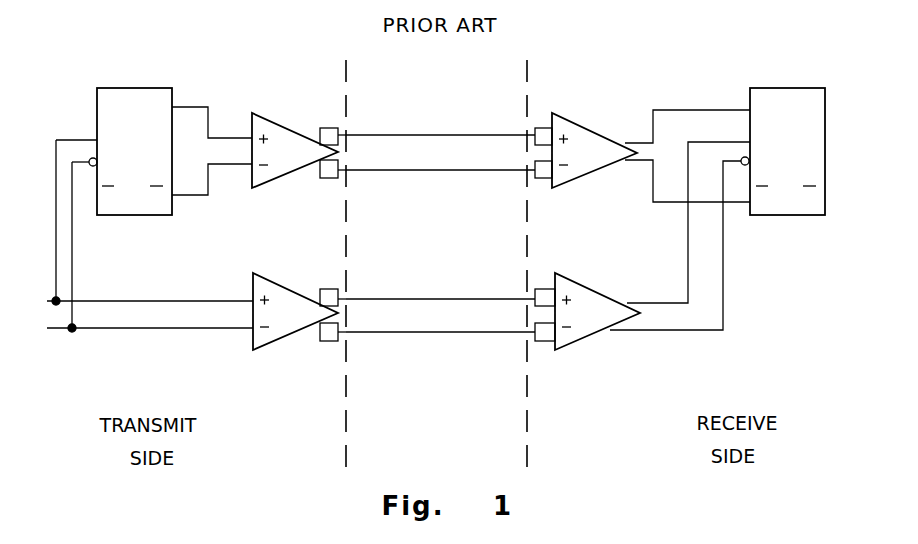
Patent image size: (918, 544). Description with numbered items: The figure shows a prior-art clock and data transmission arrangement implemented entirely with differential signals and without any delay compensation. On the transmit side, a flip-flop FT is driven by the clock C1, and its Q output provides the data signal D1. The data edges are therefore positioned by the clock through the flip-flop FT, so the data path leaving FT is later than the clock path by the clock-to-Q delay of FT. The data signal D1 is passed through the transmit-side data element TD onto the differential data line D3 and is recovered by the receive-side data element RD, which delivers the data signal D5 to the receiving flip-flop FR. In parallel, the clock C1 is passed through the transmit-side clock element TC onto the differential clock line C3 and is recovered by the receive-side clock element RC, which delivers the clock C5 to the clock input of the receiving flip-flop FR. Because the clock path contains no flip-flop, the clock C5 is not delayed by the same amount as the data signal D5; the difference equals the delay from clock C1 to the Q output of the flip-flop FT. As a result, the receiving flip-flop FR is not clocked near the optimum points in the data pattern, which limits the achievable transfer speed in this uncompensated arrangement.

The flip-flop FT is at (114, 164).
The transmit data signal D1 is at (212, 151).
The data transmitter/driver TD is at (299, 157).
The differential data line D3 is at (440, 152).
The data receiver RD is at (586, 157).
The data signal D5 is at (687, 156).
The receiving flip-flop FR is at (783, 164).
The clock C1 is at (150, 236).
The clock transmitter/driver TC is at (299, 317).
The differential clock line C3 is at (440, 315).
The clock receiver RC is at (587, 318).
The clock C5 is at (680, 236).